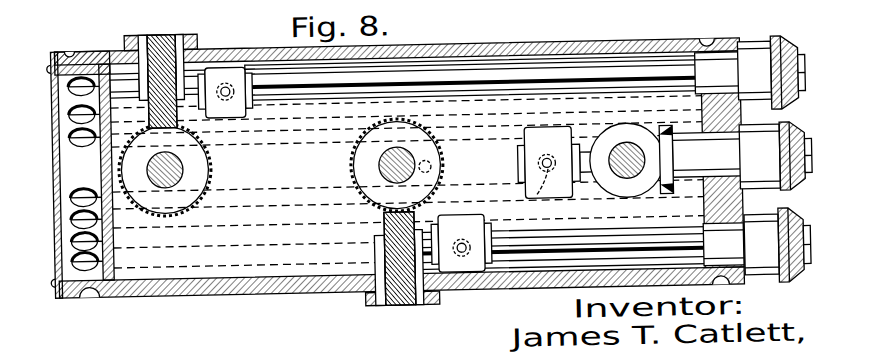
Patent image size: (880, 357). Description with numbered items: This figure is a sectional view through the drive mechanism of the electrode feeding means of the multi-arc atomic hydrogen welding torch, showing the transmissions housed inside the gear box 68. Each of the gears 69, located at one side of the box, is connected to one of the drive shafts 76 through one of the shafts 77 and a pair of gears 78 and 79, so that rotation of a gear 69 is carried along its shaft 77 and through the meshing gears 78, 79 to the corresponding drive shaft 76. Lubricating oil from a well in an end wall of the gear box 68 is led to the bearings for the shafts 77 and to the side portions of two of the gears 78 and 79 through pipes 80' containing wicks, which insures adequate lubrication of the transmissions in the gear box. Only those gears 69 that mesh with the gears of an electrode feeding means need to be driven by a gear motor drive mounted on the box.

The gear box 68 is at (533, 48).
The gears 69 is at (764, 46).
The drive shafts 76 is at (183, 173).
The shafts 77 is at (665, 68).
The gears 78 is at (160, 30).
The gears 79 is at (200, 166).
The pipes 80' is at (115, 59).